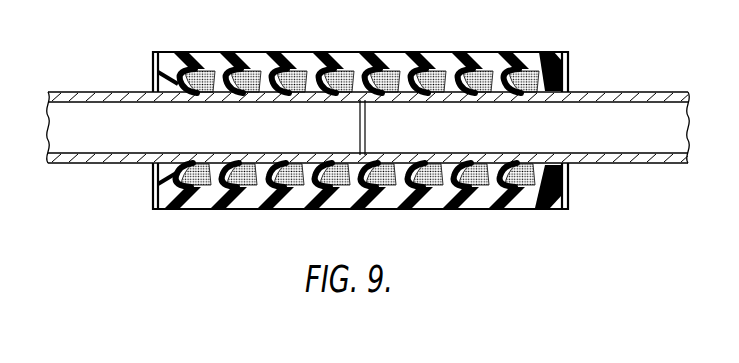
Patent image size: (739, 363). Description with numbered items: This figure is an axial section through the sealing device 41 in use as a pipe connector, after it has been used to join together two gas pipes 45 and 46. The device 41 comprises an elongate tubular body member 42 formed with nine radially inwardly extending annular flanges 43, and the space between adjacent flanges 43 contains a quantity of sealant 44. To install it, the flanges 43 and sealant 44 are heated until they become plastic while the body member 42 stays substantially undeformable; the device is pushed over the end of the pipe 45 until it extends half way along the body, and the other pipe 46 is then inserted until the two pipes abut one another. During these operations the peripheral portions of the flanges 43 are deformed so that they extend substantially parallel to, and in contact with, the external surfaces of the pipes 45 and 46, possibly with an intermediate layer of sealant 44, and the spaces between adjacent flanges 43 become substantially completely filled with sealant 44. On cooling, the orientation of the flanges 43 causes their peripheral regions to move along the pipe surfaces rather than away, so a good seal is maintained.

The sealing device 41 is at (359, 134).
The tubular body member 42 is at (183, 51).
The annular flanges 43 is at (157, 72).
The sealant 44 is at (362, 69).
The gas pipe 45 is at (99, 164).
The gas pipe 46 is at (586, 165).